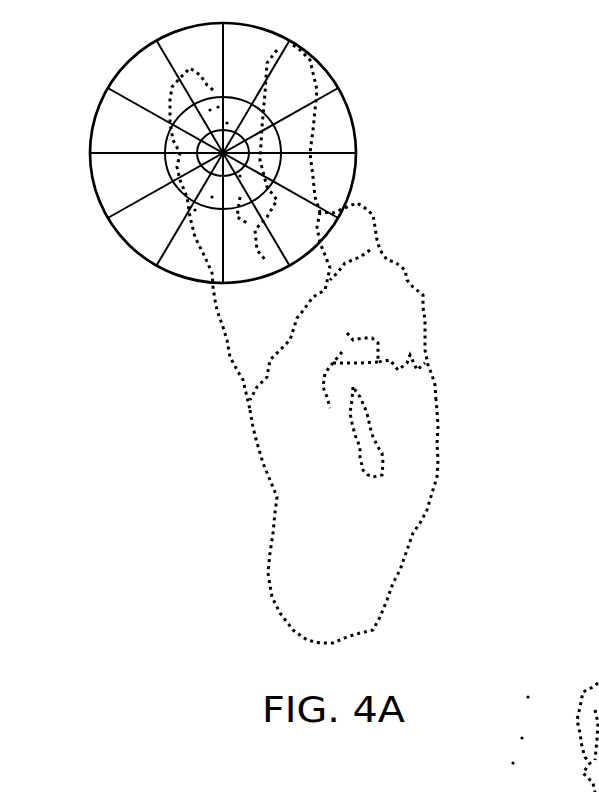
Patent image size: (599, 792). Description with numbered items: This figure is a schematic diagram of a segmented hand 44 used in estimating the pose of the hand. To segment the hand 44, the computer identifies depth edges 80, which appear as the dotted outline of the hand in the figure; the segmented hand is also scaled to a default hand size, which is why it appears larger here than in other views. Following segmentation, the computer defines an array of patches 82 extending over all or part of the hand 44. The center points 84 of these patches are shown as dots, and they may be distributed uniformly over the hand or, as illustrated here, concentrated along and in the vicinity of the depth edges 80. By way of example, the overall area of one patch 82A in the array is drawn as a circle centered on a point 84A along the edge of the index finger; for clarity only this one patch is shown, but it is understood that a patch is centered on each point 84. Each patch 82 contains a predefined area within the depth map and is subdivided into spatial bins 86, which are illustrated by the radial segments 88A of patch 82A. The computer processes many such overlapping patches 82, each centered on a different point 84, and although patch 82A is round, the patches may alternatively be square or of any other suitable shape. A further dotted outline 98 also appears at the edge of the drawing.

The patch 82A is at (353, 107).
The radial segments 88A is at (353, 167).
The center point 84A is at (252, 184).
The patches 82 is at (473, 220).
The spatial bins 86 is at (483, 251).
The depth edges 80 is at (247, 407).
The center points 84 is at (427, 428).
The hand 44 is at (295, 525).
The adjacent structure 98 is at (598, 683).